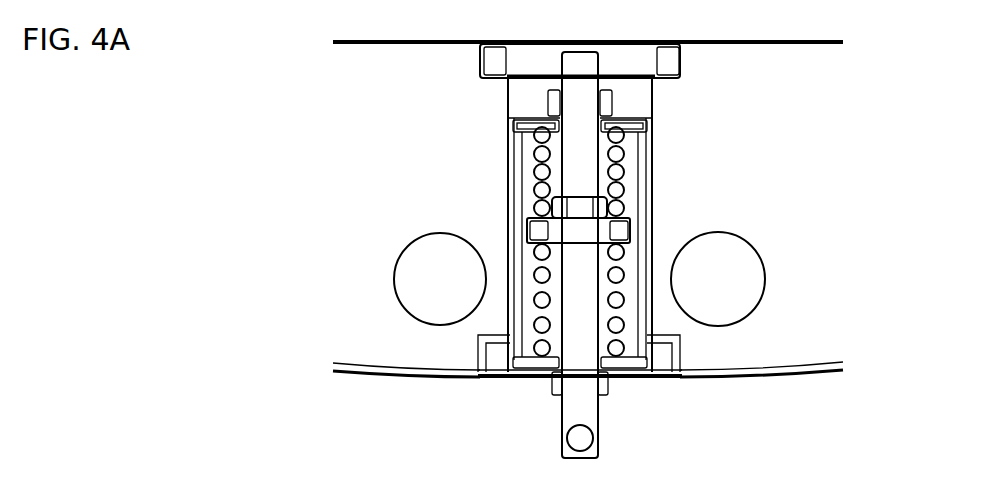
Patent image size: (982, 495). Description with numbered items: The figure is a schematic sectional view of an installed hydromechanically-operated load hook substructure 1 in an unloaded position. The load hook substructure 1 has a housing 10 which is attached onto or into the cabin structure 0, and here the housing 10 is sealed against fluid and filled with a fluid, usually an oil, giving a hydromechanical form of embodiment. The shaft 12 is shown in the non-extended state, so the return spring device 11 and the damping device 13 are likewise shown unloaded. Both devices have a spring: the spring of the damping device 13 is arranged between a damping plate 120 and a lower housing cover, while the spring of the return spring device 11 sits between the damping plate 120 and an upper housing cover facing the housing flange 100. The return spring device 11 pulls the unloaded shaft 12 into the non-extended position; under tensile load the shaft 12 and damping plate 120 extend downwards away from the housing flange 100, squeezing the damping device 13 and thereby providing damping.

The cabin structure 0 is at (773, 150).
The load hook substructure 1 is at (485, 105).
The housing flange 100 is at (665, 60).
The housing 10 is at (505, 170).
The return spring device 11 is at (488, 133).
The damping plate 120 is at (575, 236).
The damping device 13 is at (510, 250).
The shaft 12 is at (577, 403).